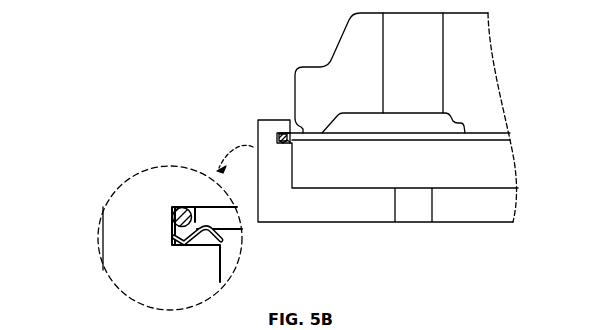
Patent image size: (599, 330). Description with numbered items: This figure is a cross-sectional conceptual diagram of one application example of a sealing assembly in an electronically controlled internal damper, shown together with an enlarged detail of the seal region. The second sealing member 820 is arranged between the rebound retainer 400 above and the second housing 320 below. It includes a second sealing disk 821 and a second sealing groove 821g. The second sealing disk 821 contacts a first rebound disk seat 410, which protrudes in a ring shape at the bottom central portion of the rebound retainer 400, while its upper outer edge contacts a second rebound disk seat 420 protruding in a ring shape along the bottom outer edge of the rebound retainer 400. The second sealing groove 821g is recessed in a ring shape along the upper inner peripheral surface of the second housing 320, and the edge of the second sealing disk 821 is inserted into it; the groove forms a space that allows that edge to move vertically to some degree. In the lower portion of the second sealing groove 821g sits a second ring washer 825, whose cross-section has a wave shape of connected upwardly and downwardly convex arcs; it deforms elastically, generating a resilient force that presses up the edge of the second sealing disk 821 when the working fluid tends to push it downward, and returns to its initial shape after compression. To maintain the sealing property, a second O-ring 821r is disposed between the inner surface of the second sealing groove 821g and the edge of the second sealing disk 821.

The rebound retainer 400 is at (350, 47).
The first rebound disk seat 410 is at (488, 128).
The second rebound disk seat 420 is at (293, 125).
The second housing 320 is at (310, 213).
The second sealing member 820 is at (403, 250).
The second sealing disk 821 is at (413, 140).
The second sealing groove 821g is at (291, 145).
The second O-ring 821r is at (172, 240).
The second ring washer 825 is at (103, 207).